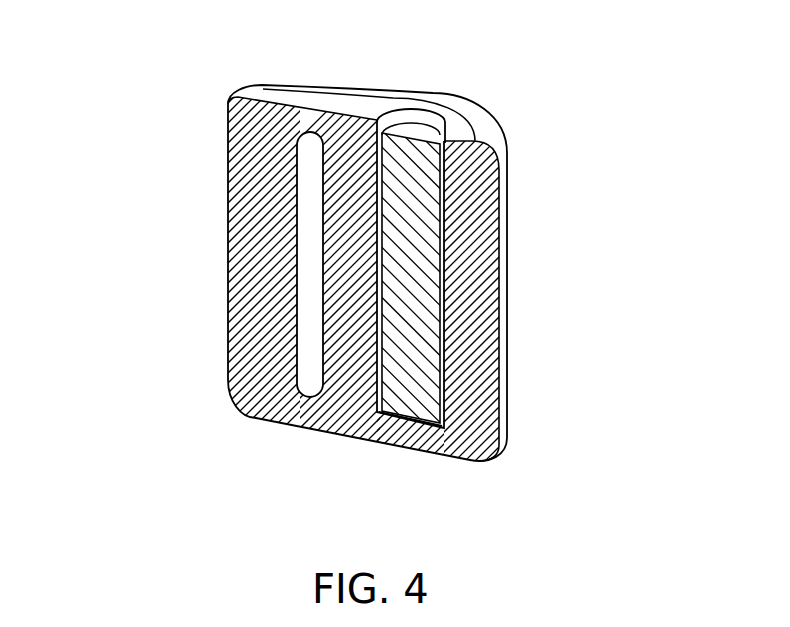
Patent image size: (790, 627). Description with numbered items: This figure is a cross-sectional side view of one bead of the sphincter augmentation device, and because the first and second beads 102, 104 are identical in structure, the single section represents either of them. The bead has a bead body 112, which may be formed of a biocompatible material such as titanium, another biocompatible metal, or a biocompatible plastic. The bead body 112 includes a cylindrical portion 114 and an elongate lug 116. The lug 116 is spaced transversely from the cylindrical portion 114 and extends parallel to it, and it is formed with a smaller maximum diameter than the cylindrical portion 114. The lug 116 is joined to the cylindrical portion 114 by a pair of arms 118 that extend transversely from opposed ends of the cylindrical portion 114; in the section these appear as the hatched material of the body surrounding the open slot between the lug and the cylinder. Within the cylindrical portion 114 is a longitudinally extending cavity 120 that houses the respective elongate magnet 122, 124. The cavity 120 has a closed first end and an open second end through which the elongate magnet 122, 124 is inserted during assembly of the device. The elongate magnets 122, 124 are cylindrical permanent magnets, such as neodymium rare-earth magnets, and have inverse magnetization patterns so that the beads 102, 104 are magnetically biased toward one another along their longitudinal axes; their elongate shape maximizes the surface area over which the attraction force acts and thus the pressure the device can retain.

The first bead 102 is at (273, 273).
The second bead 104 is at (228, 111).
The bead body 112 is at (487, 108).
The cylindrical portion 114 is at (507, 176).
The elongate lug 116 is at (229, 227).
The arms 118 is at (357, 107).
The cavity 120 is at (404, 112).
The elongate magnet 122 is at (401, 275).
The elongate magnet 124 is at (417, 285).